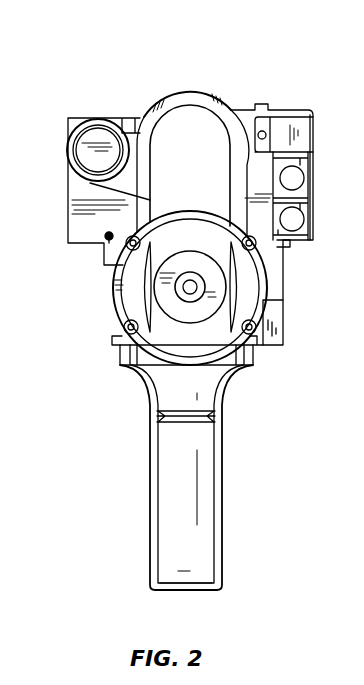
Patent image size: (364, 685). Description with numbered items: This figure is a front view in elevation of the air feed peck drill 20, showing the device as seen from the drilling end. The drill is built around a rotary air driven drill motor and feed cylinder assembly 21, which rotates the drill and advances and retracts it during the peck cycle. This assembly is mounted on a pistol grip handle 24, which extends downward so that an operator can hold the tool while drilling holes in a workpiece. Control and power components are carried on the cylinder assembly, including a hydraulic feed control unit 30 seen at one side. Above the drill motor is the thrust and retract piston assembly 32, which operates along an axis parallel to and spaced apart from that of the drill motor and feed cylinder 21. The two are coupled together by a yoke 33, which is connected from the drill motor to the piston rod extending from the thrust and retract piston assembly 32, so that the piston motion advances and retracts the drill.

The air feed peck drill 20 is at (168, 82).
The drill motor and feed cylinder assembly 21 is at (283, 304).
The pistol grip handle 24 is at (205, 490).
The hydraulic feed control unit 30 is at (99, 118).
The thrust and retract piston assembly 32 is at (209, 101).
The yoke 33 is at (197, 180).